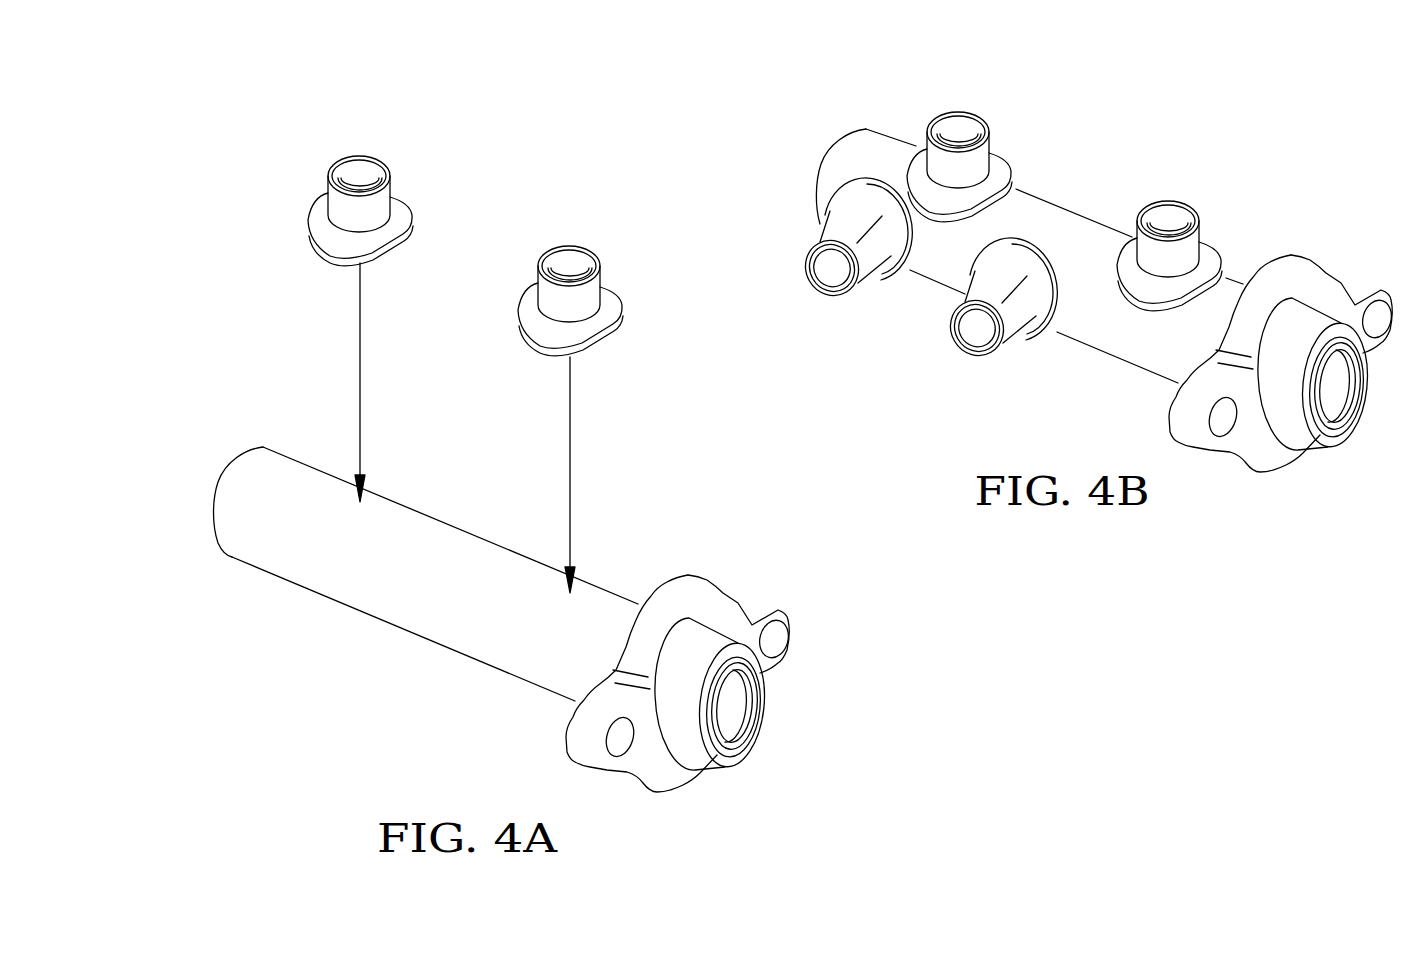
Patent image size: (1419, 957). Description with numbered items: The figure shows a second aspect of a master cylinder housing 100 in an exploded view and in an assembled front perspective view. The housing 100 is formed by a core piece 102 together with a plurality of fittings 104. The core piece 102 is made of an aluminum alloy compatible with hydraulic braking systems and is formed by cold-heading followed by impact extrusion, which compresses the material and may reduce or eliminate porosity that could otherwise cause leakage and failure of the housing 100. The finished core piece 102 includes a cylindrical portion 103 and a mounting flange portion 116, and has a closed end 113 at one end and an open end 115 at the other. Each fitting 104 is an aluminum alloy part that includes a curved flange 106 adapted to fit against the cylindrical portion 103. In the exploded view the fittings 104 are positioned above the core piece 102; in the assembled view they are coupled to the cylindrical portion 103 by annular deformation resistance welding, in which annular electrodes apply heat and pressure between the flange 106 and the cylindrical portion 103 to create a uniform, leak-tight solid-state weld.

In FIG. 4A, the master cylinder housing 100 is at (215, 140).
In FIG. 4B, the master cylinder housing 100 is at (1284, 135).
In FIG. 4A, the core piece 102 is at (330, 637).
In FIG. 4B, the core piece 102 is at (1095, 343).
In FIG. 4A, the cylindrical portion 103 is at (503, 668).
In FIG. 4B, the cylindrical portion 103 is at (1082, 217).
In FIG. 4A, the fittings 104 is at (387, 195).
In FIG. 4B, the fittings 104 is at (984, 153).
In FIG. 4A, the curved flange 106 is at (318, 197).
In FIG. 4A, the closed end 113 is at (243, 445).
In FIG. 4B, the closed end 113 is at (822, 148).
In FIG. 4A, the open end 115 is at (758, 748).
In FIG. 4B, the open end 115 is at (1348, 443).
In FIG. 4A, the mounting flange portion 116 is at (782, 617).
In FIG. 4B, the mounting flange portion 116 is at (1319, 268).